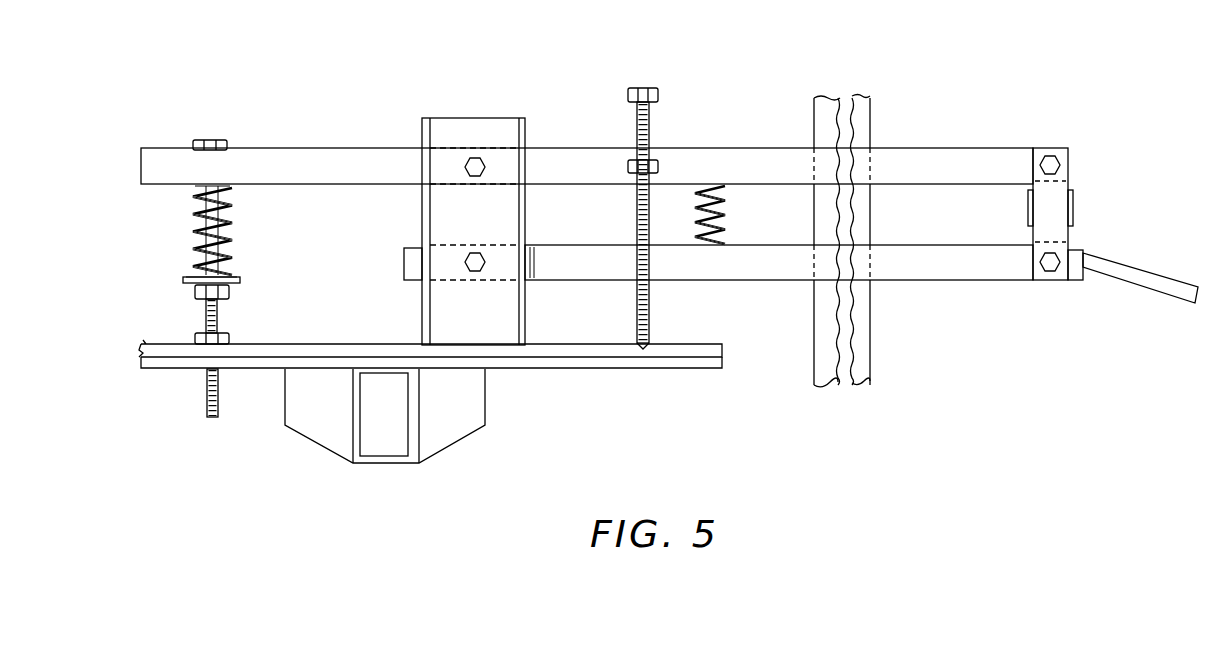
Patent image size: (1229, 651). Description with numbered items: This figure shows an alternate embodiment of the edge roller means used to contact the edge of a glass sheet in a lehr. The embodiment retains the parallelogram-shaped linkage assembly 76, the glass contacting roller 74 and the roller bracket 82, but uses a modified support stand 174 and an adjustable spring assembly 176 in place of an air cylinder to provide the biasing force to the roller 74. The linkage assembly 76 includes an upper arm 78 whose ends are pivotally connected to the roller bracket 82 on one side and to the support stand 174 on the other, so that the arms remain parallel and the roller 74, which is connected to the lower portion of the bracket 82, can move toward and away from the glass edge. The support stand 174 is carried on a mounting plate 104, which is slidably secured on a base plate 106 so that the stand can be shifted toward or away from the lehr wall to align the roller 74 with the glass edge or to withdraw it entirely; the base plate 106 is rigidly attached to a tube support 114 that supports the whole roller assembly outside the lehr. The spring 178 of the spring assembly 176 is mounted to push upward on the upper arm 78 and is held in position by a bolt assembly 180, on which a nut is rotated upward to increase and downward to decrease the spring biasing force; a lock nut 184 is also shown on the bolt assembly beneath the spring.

The glass contacting roller 74 is at (1168, 276).
The parallelogram-shaped linkage assembly 76 is at (955, 100).
The upper arm 78 is at (337, 148).
The roller bracket 82 is at (1073, 236).
The mounting plate 104 is at (722, 348).
The base plate 106 is at (700, 368).
The tube support 114 is at (395, 463).
The modified support stand 174 is at (422, 126).
The adjustable spring assembly 176 is at (196, 270).
The spring 178 is at (193, 210).
The bolt assembly 180 is at (208, 140).
The lock nut 184 is at (197, 290).